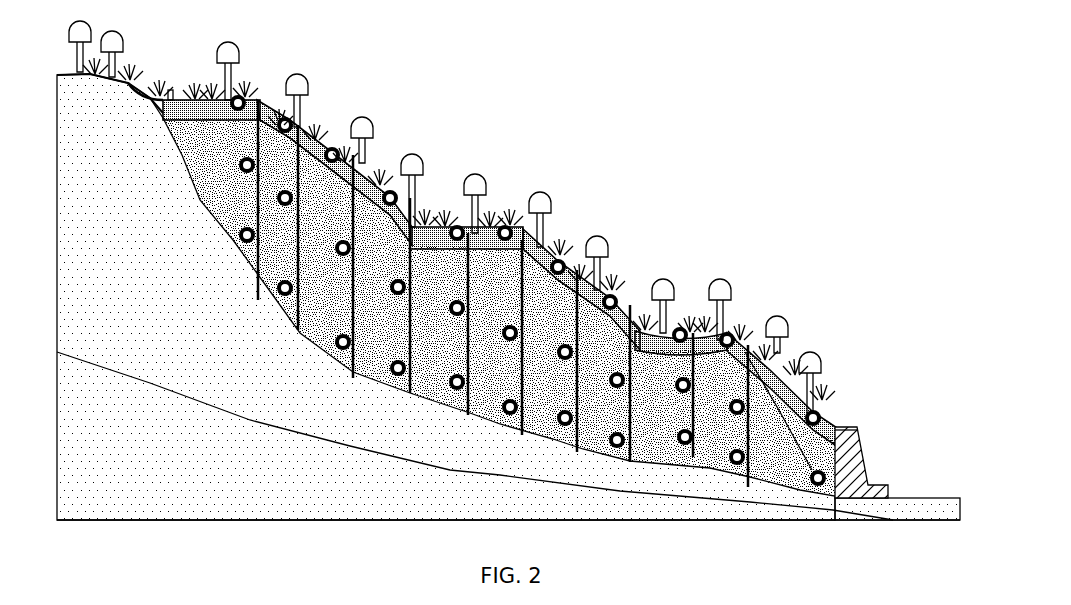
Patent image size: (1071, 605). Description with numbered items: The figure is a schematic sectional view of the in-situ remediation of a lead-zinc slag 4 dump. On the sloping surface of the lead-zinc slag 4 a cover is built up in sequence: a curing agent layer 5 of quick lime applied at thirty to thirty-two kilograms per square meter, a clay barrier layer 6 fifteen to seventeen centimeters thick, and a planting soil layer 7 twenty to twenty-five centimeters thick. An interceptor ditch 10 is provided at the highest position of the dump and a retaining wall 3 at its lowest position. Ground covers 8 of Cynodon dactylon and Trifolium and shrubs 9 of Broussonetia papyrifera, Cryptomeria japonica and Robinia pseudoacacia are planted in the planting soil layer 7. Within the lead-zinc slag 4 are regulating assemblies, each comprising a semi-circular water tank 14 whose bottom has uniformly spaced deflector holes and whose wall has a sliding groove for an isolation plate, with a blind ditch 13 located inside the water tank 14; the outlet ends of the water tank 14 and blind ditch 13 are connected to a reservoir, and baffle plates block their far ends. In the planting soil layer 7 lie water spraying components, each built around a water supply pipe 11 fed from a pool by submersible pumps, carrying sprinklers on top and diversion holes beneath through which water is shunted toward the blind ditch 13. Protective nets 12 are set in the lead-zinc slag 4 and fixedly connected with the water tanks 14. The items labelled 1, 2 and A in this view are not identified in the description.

The original slope ground 1 is at (513, 297).
The foundation base layer 2 is at (897, 489).
The retaining wall 3 is at (889, 440).
The lead-zinc slag 4 is at (838, 393).
The curing agent layer 5 is at (742, 335).
The clay barrier layer 6 is at (678, 327).
The planting soil layer 7 is at (617, 298).
The ground covers 8 is at (553, 247).
The shrubs 9 is at (452, 217).
The interceptor ditch 10 is at (148, 96).
The water supply pipe 11 is at (240, 97).
The protective nets 12 is at (305, 133).
The blind ditch 13 is at (388, 195).
The water tank 14 is at (500, 307).
The cushion layer A is at (866, 406).